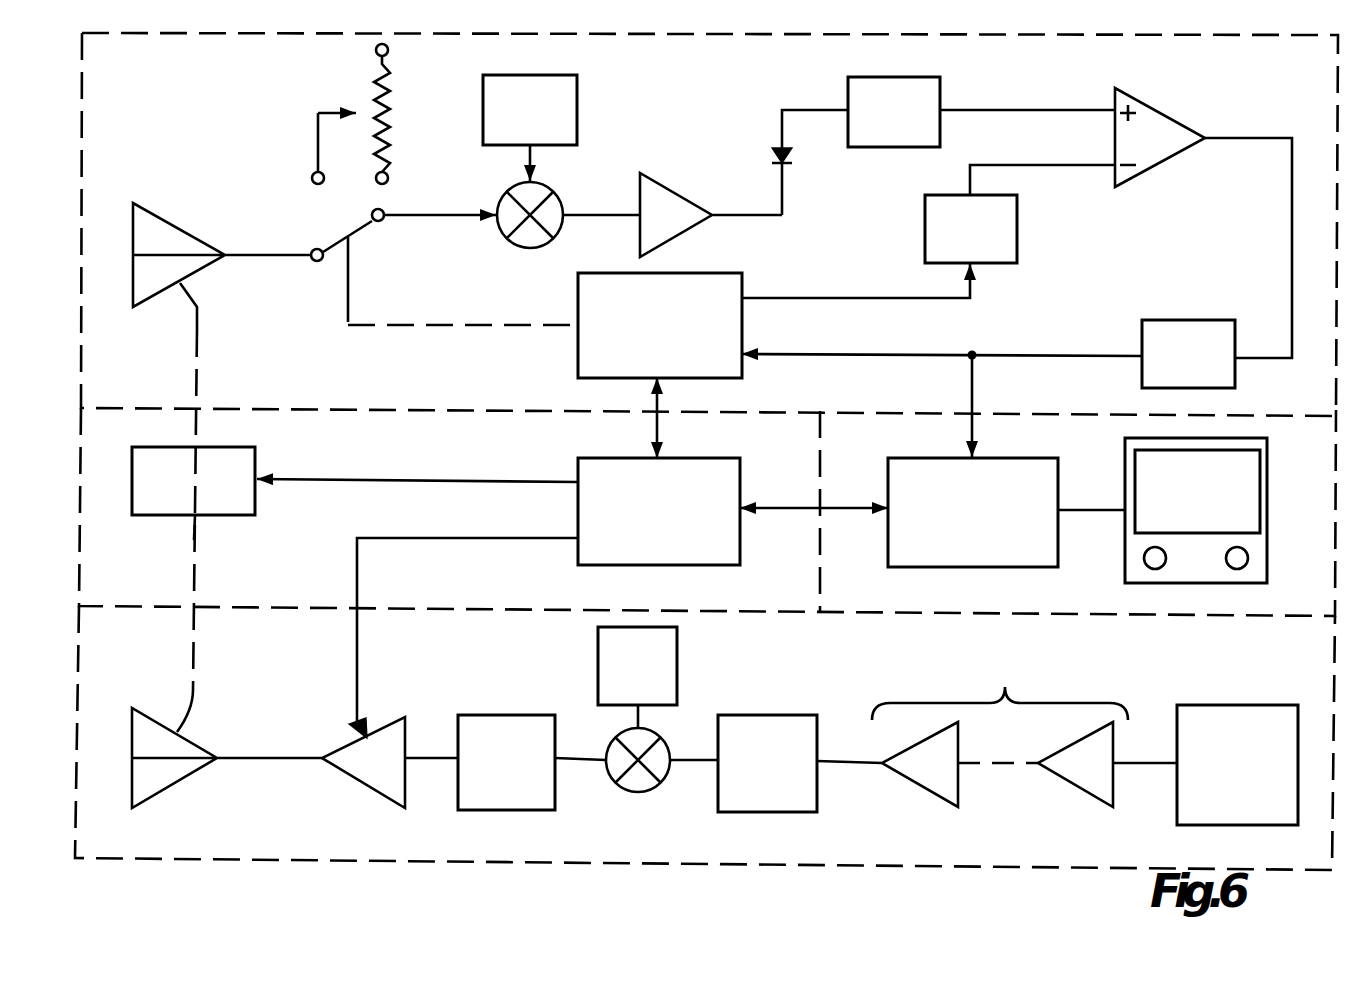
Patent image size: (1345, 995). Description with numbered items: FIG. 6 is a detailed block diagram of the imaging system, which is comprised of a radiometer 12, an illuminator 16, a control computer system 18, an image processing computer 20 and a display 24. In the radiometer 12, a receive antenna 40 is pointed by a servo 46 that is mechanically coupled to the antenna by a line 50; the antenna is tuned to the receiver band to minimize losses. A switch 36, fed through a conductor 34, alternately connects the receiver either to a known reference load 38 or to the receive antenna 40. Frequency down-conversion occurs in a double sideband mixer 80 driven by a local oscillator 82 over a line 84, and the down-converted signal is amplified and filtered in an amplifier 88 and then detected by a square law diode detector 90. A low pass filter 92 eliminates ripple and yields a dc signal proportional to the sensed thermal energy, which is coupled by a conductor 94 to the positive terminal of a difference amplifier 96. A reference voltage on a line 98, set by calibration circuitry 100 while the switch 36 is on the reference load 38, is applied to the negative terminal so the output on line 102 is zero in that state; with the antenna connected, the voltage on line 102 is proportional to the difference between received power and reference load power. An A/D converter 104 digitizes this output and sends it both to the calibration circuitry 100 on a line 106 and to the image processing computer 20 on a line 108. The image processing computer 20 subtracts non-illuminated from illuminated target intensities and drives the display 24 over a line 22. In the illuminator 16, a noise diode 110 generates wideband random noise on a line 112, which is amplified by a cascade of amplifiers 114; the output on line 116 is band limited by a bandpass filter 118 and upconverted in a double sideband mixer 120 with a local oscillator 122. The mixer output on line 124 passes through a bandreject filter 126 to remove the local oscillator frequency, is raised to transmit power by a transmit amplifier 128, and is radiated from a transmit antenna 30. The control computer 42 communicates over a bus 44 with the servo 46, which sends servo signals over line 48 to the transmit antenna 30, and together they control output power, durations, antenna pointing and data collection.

The radiometer 12 is at (709, 224).
The illuminator 16 is at (705, 738).
The control computer system 18 is at (707, 512).
The image processing computer 20 is at (935, 470).
The line 22 is at (1093, 508).
The display 24 is at (1267, 500).
The transmit antenna 30 is at (148, 725).
The conductor 34 is at (466, 212).
The switch 36 is at (352, 228).
The reference load 38 is at (352, 112).
The receive antenna 40 is at (183, 245).
The control computer 42 is at (697, 470).
The bus 44 is at (400, 479).
The servo 46 is at (232, 452).
The line 48 is at (195, 537).
The line 50 is at (210, 330).
The double sideband mixer 80 is at (496, 222).
The local oscillator 82 is at (578, 110).
The line 84 is at (536, 160).
The amplifier 88 is at (668, 198).
The square law diode detector 90 is at (794, 154).
The low pass filter 92 is at (942, 90).
The conductor 94 is at (1005, 110).
The difference amplifier 96 is at (1157, 122).
The line 98 is at (1030, 165).
The calibration circuitry 100 is at (578, 345).
The line 102 is at (925, 222).
The A/D converter 104 is at (1192, 325).
The line 106 is at (846, 355).
The line 108 is at (972, 384).
The noise diode 110 is at (1238, 715).
The line 112 is at (1143, 765).
The cascade of amplifiers 114 is at (1080, 700).
The line 116 is at (855, 765).
The bandpass filter 118 is at (748, 725).
The double sideband mixer 120 is at (623, 743).
The local oscillator 122 is at (678, 650).
The line 124 is at (583, 765).
The bandreject filter 126 is at (510, 728).
The transmit amplifier 128 is at (403, 727).